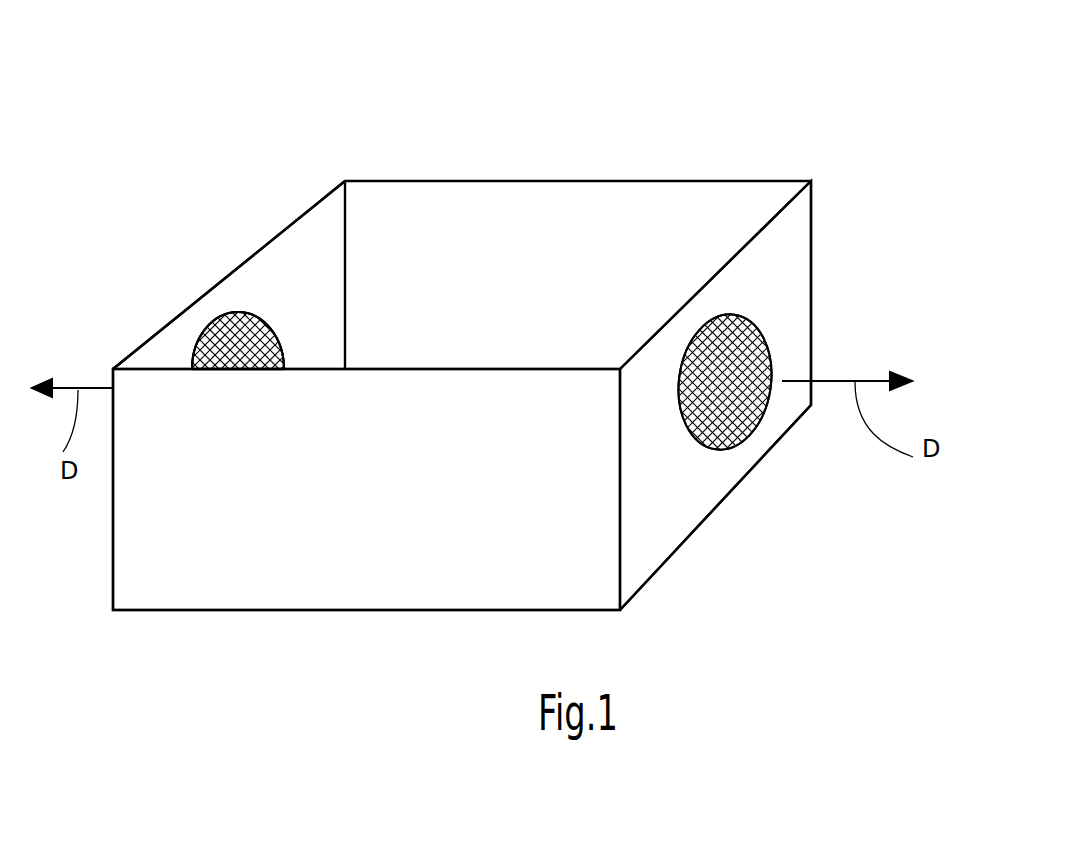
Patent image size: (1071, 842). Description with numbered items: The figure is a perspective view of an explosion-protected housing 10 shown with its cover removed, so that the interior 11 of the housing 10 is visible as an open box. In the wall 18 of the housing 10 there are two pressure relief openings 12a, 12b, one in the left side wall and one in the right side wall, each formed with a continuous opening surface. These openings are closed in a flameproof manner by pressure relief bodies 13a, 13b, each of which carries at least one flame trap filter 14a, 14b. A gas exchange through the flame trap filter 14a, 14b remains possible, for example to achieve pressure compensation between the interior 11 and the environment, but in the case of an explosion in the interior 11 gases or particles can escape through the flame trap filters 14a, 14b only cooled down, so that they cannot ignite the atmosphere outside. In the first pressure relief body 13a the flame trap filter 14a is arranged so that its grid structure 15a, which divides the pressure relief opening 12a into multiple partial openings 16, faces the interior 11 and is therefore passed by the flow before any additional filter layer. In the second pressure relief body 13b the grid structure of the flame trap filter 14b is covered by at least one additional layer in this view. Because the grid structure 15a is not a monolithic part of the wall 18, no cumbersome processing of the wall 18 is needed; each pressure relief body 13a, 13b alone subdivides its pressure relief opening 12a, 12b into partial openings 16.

The explosion-protected housing 10 is at (751, 146).
The interior 11 is at (548, 326).
The first pressure relief opening 12a is at (247, 282).
The second pressure relief opening 12b is at (792, 324).
The first pressure relief body 13a is at (223, 337).
The second pressure relief body 13b is at (772, 426).
The flame trap filter 14a is at (262, 318).
The flame trap filter 14b is at (745, 442).
The grid structure 15a is at (288, 324).
The partial openings 16 is at (262, 365).
The wall 18 is at (143, 347).